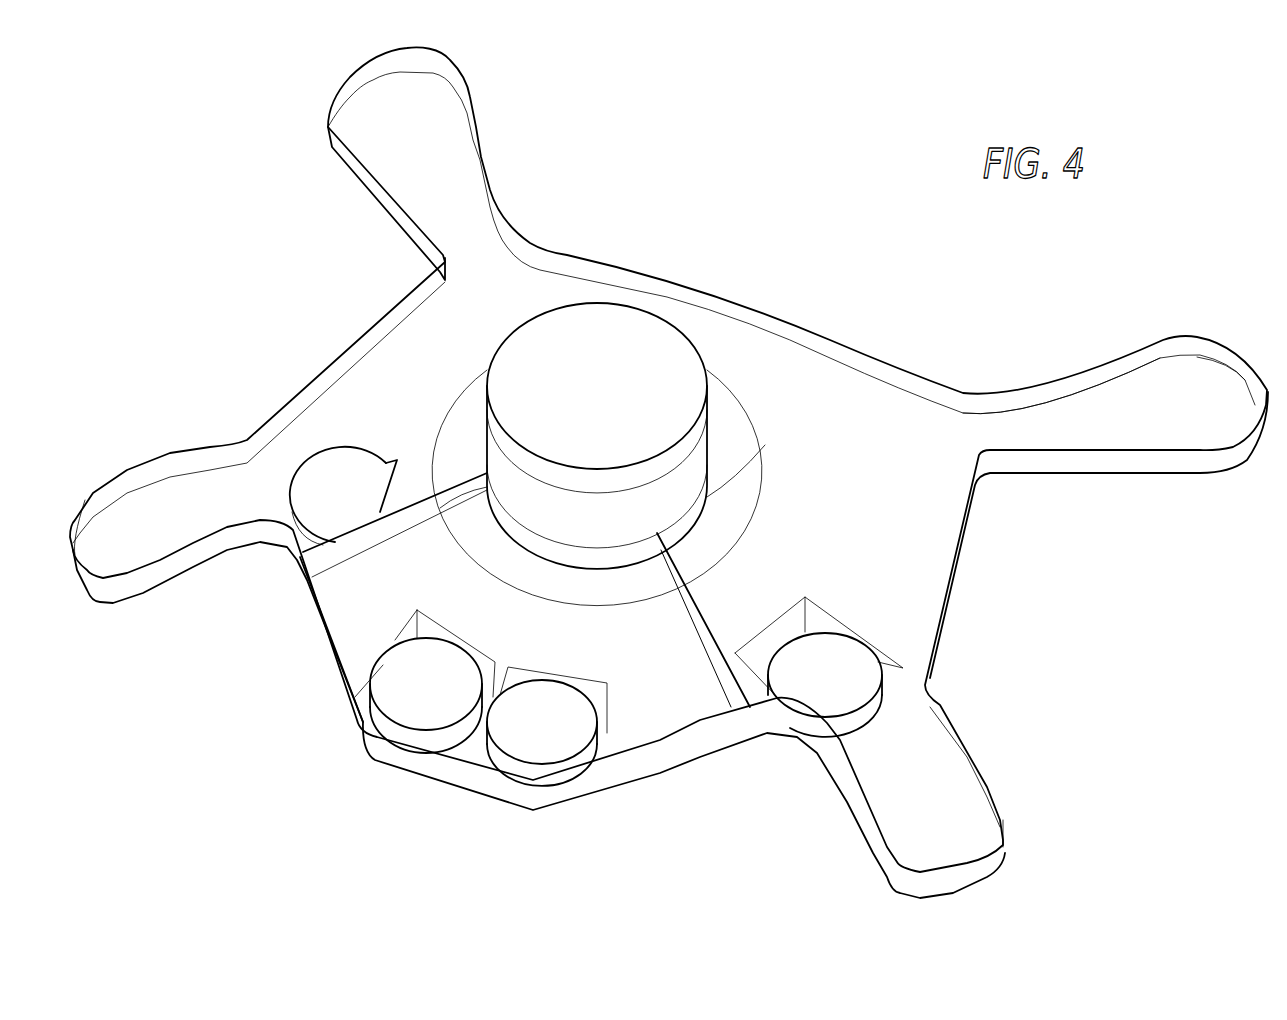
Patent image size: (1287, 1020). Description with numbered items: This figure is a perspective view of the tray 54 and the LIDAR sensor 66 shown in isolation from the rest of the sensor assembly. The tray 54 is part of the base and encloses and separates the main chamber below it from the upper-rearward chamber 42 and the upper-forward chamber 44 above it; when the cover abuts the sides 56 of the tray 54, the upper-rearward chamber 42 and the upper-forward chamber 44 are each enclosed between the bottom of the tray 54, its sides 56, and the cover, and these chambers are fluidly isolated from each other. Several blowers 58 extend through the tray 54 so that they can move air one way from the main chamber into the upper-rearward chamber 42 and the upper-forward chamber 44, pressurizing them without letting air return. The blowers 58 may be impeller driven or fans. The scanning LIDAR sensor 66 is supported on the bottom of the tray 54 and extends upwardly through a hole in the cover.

The upper-rearward chamber 42 is at (838, 412).
The upper-forward chamber 44 is at (378, 600).
The tray 54 is at (710, 158).
The sides 56 is at (1173, 353).
The blowers 58 is at (350, 473).
The LIDAR sensor 66 is at (652, 352).